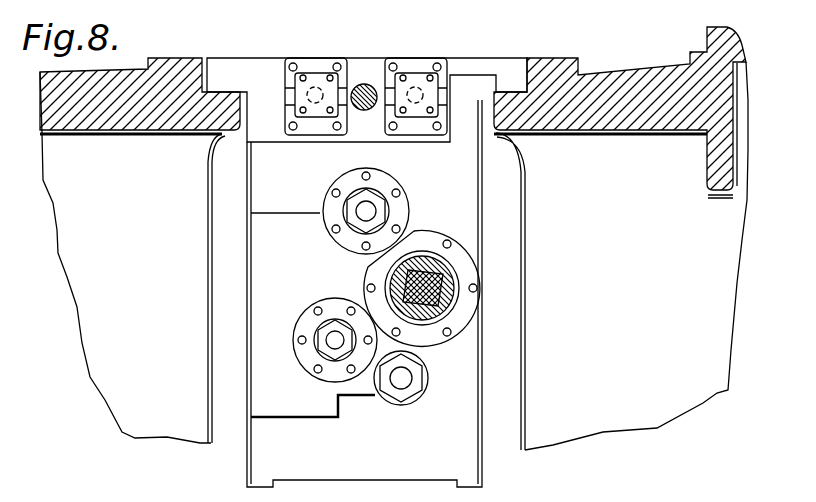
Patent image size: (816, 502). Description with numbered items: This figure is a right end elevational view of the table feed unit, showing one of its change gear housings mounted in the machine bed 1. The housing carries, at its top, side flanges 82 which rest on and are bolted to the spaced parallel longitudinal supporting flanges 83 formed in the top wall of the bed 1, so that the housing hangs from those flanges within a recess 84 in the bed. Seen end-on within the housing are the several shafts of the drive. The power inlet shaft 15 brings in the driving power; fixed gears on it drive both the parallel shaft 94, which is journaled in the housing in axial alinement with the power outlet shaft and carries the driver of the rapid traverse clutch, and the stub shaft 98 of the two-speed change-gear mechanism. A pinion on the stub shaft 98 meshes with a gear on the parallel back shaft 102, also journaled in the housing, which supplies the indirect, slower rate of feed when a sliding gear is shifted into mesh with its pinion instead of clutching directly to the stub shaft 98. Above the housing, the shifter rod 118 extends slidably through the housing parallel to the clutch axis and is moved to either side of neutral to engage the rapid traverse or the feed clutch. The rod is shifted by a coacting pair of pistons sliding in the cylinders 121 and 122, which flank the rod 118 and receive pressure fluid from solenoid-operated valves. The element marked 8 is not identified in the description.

The bed 1 is at (643, 78).
The gear housing 8 is at (258, 463).
The power inlet shaft 15 is at (453, 293).
The side flanges 82 is at (510, 66).
The supporting flanges 83 is at (229, 134).
The recess 84 is at (508, 430).
The parallel shaft 94 is at (368, 211).
The stub shaft 98 is at (337, 340).
The back shaft 102 is at (401, 386).
The shifter rod 118 is at (368, 84).
The cylinder 121 is at (416, 78).
The cylinder 122 is at (318, 80).